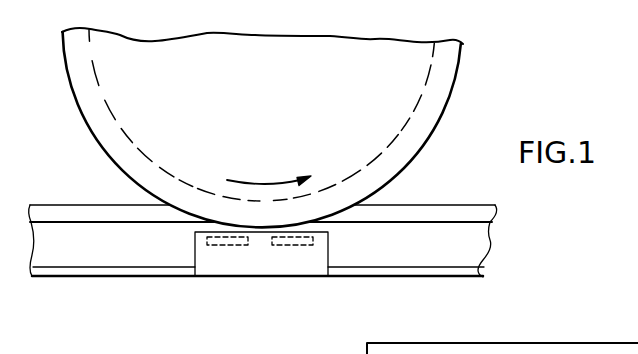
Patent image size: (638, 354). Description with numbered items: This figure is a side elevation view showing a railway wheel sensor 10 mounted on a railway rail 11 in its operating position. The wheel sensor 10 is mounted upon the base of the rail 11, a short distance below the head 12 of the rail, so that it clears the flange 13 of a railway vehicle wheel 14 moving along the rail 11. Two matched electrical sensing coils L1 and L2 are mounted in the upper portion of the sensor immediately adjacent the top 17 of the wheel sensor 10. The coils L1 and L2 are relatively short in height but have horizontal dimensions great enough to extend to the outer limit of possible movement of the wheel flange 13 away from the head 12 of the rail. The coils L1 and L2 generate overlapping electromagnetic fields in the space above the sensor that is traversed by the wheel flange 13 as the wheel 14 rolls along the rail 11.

The railway vehicle wheel 14 is at (278, 100).
The flange 13 is at (395, 172).
The head 12 is at (85, 215).
The railway rail 11 is at (108, 250).
The railway wheel sensor 10 is at (262, 260).
The electrical sensing coil L1 is at (230, 247).
The electrical sensing coil L2 is at (298, 247).
The top 17 is at (316, 230).